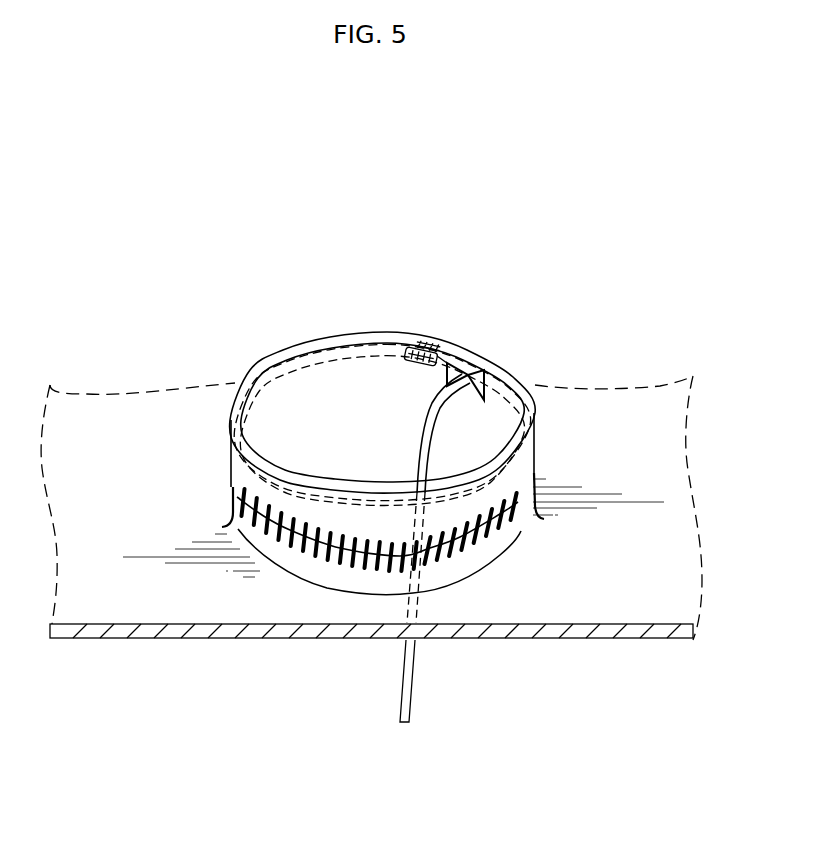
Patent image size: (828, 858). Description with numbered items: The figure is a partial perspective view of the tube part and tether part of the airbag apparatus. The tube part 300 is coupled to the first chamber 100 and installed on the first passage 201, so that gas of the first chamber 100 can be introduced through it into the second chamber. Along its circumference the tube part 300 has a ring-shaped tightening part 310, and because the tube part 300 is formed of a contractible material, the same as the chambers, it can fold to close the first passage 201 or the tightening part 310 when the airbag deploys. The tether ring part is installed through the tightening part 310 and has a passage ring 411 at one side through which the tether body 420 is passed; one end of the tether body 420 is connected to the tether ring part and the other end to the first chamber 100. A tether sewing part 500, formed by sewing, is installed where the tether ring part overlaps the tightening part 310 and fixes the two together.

The first chamber 100 is at (583, 600).
The first passage 201 is at (302, 530).
The tube part 300 is at (345, 377).
The tightening part 310 is at (278, 363).
The passage ring 411 is at (468, 387).
The tether body 420 is at (367, 360).
The tether sewing part 500 is at (422, 352).